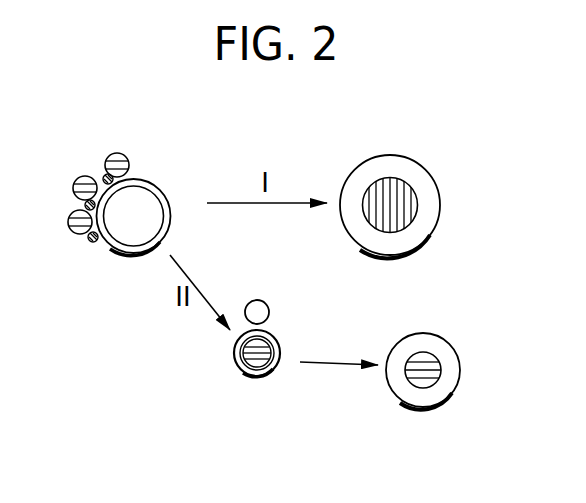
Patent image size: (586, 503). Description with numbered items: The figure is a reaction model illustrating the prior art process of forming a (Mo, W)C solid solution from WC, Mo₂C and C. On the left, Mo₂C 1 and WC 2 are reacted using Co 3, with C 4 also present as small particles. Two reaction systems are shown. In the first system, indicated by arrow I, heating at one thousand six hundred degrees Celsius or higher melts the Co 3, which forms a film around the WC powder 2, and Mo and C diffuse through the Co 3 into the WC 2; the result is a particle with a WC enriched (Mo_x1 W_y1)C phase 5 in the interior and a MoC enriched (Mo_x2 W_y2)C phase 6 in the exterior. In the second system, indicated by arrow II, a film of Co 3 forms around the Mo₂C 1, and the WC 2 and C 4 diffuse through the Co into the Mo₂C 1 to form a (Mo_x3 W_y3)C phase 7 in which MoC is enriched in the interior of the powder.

The Mo₂C 1 is at (86, 178).
The WC 2 is at (140, 198).
The Co 3 is at (127, 251).
The C 4 is at (93, 243).
The WC enriched (Mo_x1 W_y1)C phase 5 is at (400, 200).
The MoC enriched (Mo_x2 W_y2)C phase 6 is at (380, 246).
The (Mo_x3 W_y3)C phase 7 is at (405, 390).